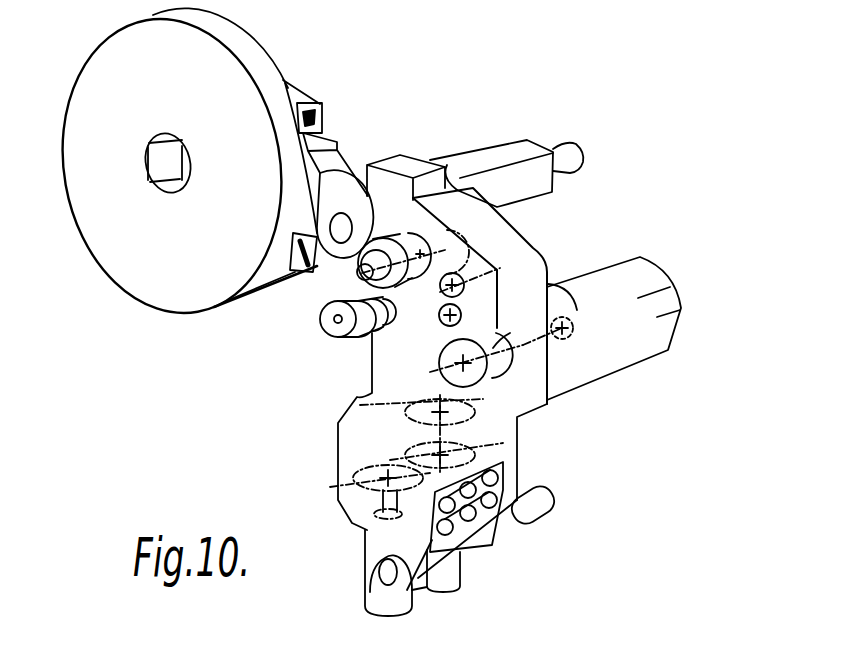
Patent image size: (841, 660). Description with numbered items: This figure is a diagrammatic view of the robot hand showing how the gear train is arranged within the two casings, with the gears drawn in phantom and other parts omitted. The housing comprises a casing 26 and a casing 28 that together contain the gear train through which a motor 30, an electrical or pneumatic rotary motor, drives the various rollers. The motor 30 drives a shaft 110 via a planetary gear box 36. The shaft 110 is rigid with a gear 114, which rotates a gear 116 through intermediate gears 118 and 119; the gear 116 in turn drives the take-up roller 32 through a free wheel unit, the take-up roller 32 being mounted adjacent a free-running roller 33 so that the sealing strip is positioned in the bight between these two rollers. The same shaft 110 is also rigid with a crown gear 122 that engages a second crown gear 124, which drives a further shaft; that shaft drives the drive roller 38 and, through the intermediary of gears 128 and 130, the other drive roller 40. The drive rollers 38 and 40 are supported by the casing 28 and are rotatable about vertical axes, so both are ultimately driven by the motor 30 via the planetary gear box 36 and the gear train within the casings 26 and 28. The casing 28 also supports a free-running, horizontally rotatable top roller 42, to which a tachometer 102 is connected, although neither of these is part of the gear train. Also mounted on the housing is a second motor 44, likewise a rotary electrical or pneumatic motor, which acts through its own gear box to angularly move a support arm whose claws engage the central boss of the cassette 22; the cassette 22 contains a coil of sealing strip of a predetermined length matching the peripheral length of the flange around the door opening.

The cassette 22 is at (168, 165).
The casing 26 is at (508, 296).
The casing 28 is at (402, 461).
The motor 30 is at (635, 318).
The take-up roller 32 is at (364, 169).
The free-running roller 33 is at (336, 311).
The planetary gear box 36 is at (572, 272).
The drive roller 38 is at (366, 573).
The drive roller 40 is at (465, 584).
The free-running top roller 42 is at (480, 523).
The second motor 44 is at (506, 150).
The tachometer 102 is at (554, 487).
The shaft 110 is at (559, 351).
The gear 114 is at (460, 362).
The gear 116 is at (417, 242).
The intermediate gear 118 is at (489, 272).
The intermediate gear 119 is at (429, 319).
The crown gear 122 is at (516, 325).
The second crown gear 124 is at (391, 426).
The gear 128 is at (478, 443).
The gear 130 is at (352, 492).